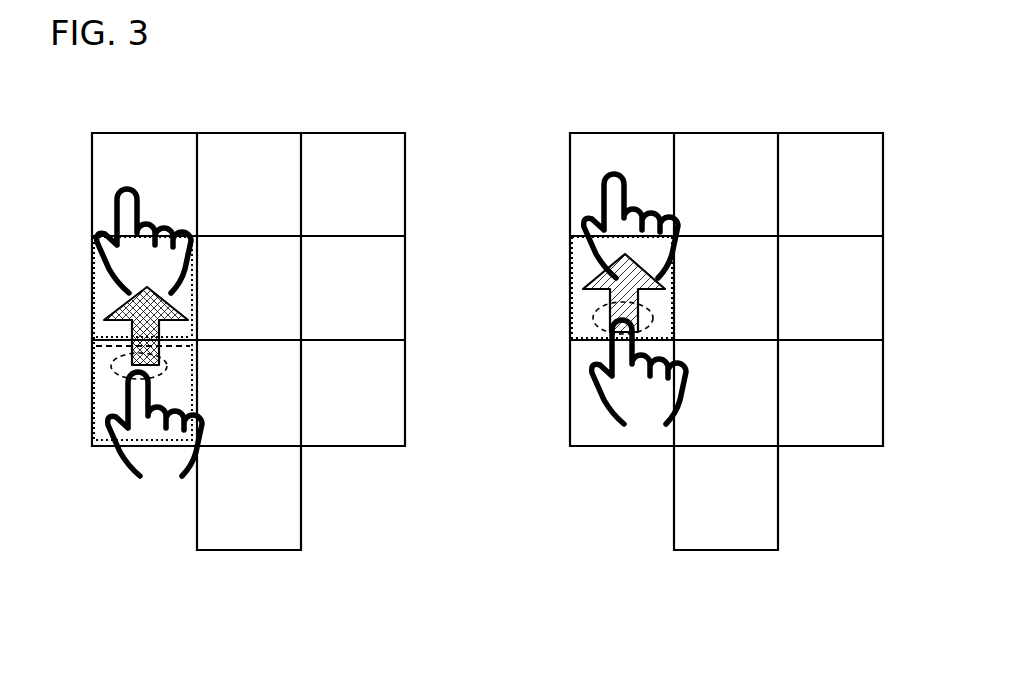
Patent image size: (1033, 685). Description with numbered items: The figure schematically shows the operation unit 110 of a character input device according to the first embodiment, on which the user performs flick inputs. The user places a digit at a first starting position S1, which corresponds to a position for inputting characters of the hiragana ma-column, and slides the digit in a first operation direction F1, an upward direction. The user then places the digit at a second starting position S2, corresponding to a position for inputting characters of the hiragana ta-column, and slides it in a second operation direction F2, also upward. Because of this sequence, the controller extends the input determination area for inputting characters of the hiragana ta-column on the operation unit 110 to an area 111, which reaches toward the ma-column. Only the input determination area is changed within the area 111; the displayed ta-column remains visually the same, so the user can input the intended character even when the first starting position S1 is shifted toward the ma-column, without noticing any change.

The operation unit 110 is at (405, 133).
The area 111 is at (172, 383).
The first operation direction F1 is at (118, 302).
The first starting position S1 is at (120, 365).
The second operation direction F2 is at (600, 283).
The second starting position S2 is at (598, 320).